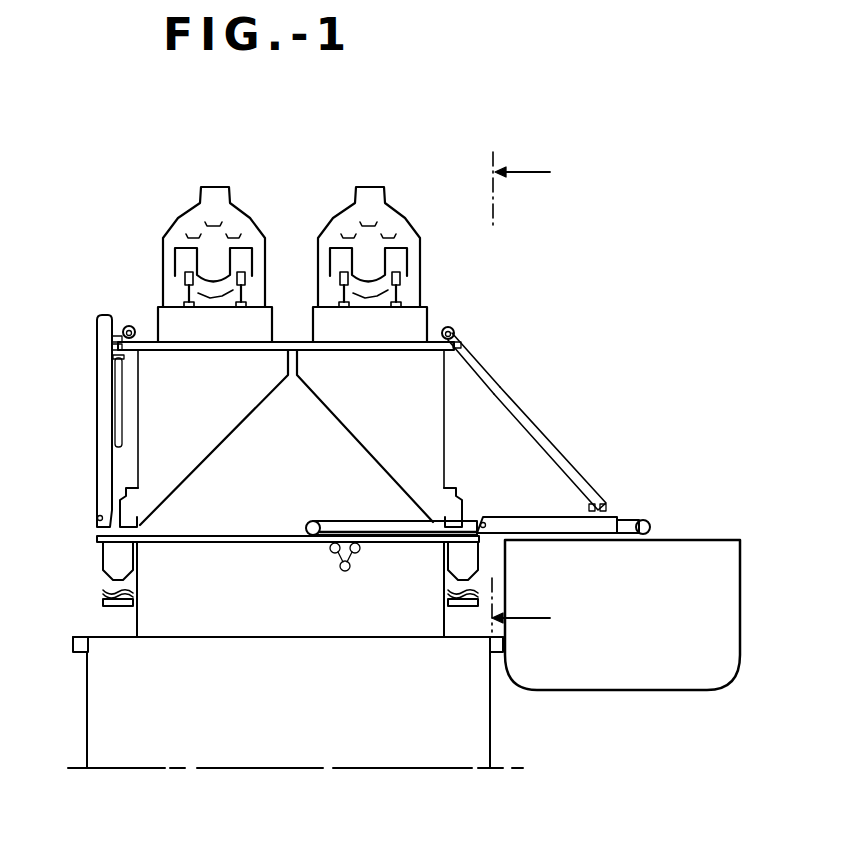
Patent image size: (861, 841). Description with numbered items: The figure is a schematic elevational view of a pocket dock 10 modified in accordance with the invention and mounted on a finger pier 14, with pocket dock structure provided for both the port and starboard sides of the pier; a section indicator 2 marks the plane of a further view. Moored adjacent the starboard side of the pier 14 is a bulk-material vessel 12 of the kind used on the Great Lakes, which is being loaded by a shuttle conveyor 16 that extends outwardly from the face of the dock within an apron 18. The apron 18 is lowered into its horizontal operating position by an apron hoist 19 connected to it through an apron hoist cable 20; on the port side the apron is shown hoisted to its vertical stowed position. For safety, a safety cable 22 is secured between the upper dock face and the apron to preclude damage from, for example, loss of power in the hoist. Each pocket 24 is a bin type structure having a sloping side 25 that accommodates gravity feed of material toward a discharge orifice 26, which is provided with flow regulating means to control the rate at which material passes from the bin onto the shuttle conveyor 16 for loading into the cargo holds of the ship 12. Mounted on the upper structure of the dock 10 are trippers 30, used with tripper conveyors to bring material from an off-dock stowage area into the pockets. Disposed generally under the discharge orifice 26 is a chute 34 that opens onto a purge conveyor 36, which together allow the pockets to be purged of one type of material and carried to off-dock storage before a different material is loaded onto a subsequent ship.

The section line 2- 2 is at (531, 392).
The pocket dock 10 is at (432, 174).
The vessel 12 is at (708, 608).
The finger pier 14 is at (473, 762).
The shuttle conveyor 16 is at (627, 517).
The apron 18 is at (100, 388).
The apron hoist 19 is at (453, 327).
The apron hoist cable 20 is at (540, 427).
The safety cable 22 is at (500, 387).
The pocket 24 is at (208, 402).
The sloping side 25 is at (372, 463).
The discharge orifice 26 is at (123, 510).
The tripper 30 is at (163, 233).
The chute 34 is at (446, 567).
The purge conveyor 36 is at (440, 590).